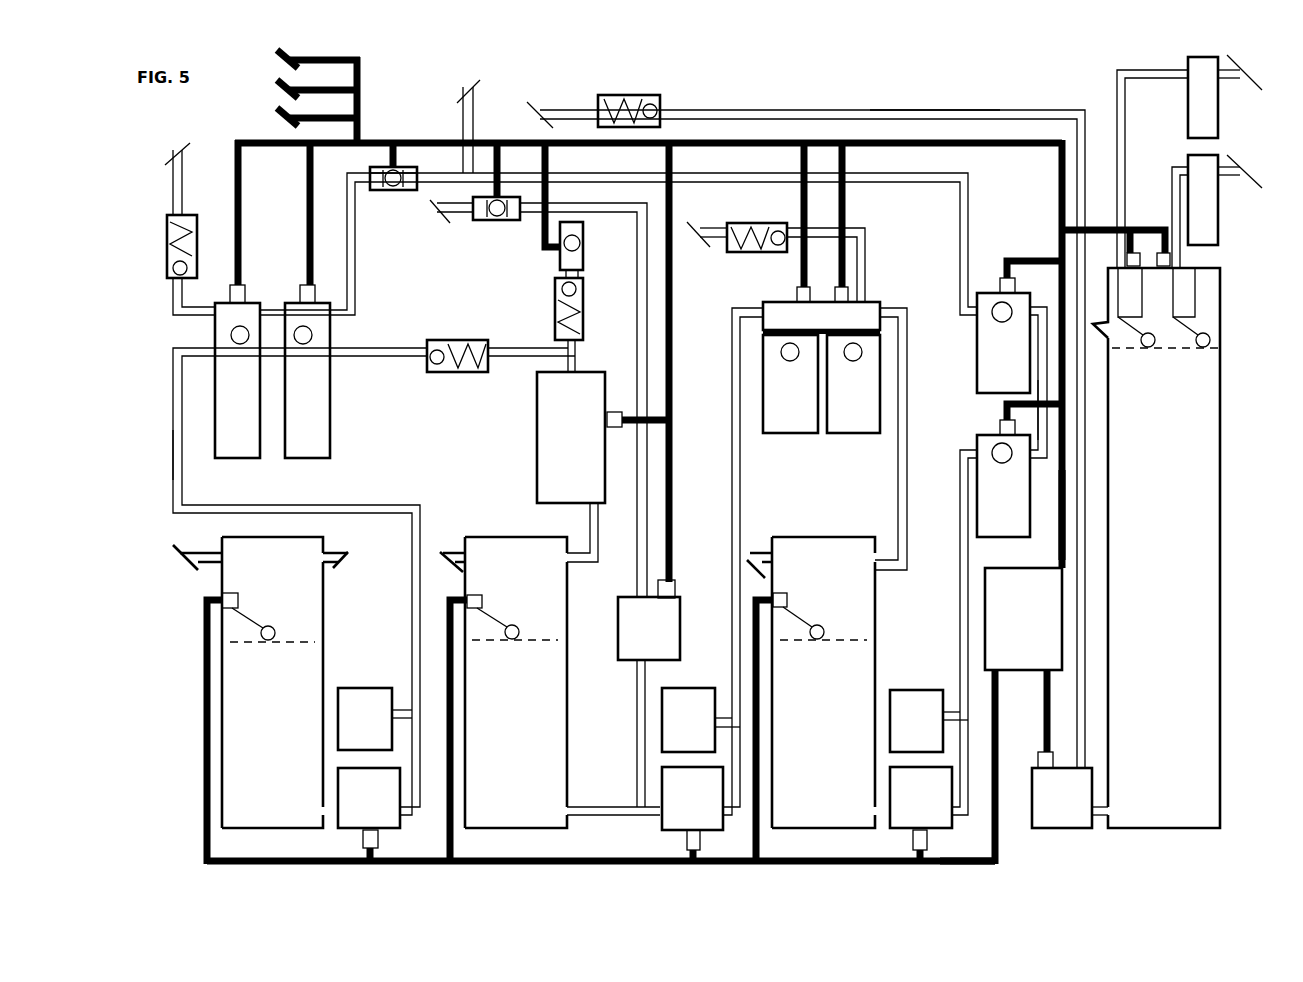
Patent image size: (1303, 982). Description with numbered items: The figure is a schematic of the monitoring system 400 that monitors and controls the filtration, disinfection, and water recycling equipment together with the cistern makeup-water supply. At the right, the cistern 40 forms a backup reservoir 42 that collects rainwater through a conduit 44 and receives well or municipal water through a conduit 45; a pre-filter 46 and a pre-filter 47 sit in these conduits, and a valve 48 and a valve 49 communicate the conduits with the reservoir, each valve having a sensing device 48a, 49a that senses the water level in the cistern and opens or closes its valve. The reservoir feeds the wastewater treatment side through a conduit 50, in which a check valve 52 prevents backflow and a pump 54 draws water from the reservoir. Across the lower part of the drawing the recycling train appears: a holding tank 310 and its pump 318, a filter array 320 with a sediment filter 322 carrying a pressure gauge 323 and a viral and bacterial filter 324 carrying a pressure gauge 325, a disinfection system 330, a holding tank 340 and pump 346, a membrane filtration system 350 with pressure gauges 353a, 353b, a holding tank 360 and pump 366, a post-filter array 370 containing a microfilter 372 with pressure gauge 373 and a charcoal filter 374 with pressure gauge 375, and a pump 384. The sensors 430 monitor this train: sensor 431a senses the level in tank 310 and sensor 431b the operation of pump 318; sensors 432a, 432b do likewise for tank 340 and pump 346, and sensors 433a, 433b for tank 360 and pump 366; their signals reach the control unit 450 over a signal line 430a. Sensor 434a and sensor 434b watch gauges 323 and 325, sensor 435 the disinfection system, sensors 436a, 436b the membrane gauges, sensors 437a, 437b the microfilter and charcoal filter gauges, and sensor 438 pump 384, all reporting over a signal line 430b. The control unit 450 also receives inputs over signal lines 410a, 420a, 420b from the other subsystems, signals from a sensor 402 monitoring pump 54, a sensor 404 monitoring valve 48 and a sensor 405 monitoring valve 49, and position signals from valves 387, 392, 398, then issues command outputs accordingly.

The cistern 40 is at (1220, 628).
The backup reservoir 42 is at (1177, 715).
The conduit 44 is at (1167, 67).
The conduit 45 is at (1178, 168).
The pre-filter 46 is at (1208, 122).
The pre-filter 47 is at (1207, 243).
The valve 48 is at (1137, 288).
The sensing device 48a is at (1154, 346).
The valve 49 is at (1185, 303).
The sensing device 49a is at (1211, 346).
The conduit 50 is at (997, 112).
The check valve 52 is at (632, 95).
The pump 54 is at (1058, 817).
The holding tank 310 is at (327, 627).
The pump 318 is at (385, 808).
The filter array 320 is at (170, 415).
The sediment filter 322 is at (235, 430).
The pressure gauge 323 is at (231, 336).
The viral and bacterial filter 324 is at (313, 430).
The pressure gauge 325 is at (312, 335).
The disinfection system 330 is at (530, 412).
The holding tank 340 is at (502, 525).
The pump 346 is at (705, 808).
The membrane filtration system 350 is at (808, 448).
The pressure gauge 353a is at (781, 352).
The pressure gauge 353b is at (861, 355).
The holding tank 360 is at (880, 623).
The pump 366 is at (933, 808).
The post-filter array 370 is at (943, 472).
The microfilter 372 is at (1003, 508).
The pressure gauge 373 is at (993, 450).
The charcoal filter 374 is at (995, 358).
The pressure gauge 375 is at (994, 308).
The pump 384 is at (658, 643).
The valve 387 is at (573, 257).
The valve 392 is at (508, 220).
The valve 398 is at (378, 190).
The monitoring system 400 is at (887, 95).
The sensor 402 is at (1042, 752).
The sensor 404 is at (1135, 262).
The sensor 405 is at (1165, 262).
The signal line 410a is at (358, 60).
The signal line 420a is at (303, 90).
The signal line 420b is at (303, 116).
The sensors 430 is at (770, 107).
The signal line 430a is at (993, 862).
The signal line 430b is at (1067, 516).
The sensor 431a is at (229, 601).
The sensor 431b is at (367, 833).
The sensor 432a is at (477, 598).
The sensor 432b is at (687, 833).
The sensor 433a is at (782, 600).
The sensor 433b is at (915, 833).
The sensor 434a is at (245, 278).
The sensor 434b is at (337, 280).
The sensor 435 is at (610, 412).
The sensor 436a is at (797, 293).
The sensor 436b is at (853, 278).
The sensor 437a is at (1002, 427).
The sensor 437b is at (1002, 278).
The sensor 438 is at (668, 583).
The control unit 450 is at (1035, 637).